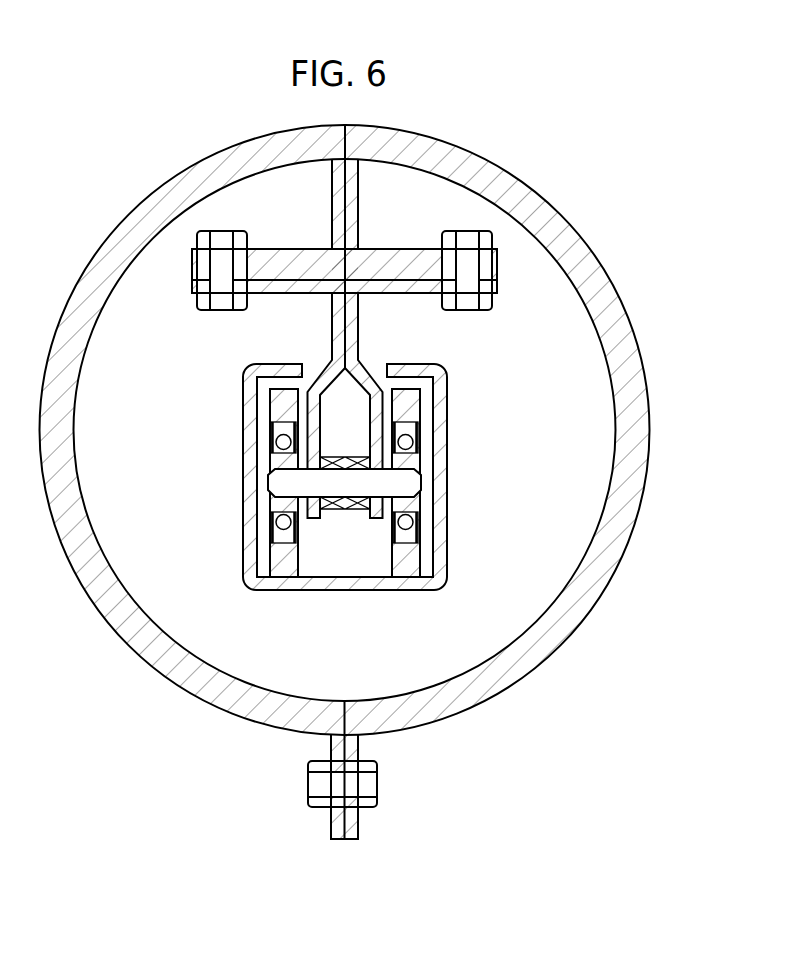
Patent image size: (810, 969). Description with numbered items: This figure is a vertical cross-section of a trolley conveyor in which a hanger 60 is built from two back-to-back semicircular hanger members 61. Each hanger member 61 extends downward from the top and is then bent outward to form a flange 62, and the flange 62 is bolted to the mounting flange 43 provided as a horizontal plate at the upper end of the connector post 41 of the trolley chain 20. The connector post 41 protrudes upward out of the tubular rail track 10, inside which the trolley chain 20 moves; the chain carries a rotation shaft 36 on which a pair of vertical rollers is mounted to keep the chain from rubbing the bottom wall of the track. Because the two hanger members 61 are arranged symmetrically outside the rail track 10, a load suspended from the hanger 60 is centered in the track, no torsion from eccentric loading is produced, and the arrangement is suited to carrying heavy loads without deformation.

The hanger 60 is at (556, 168).
The semi-circular hanger member 61 is at (577, 236).
The flange 62 is at (420, 254).
The mounting flange 43 is at (431, 293).
The connector post 41 is at (318, 344).
The tubular rail track 10 is at (447, 428).
The rotation shaft 36 is at (283, 482).
The trolley chain 20 is at (370, 568).